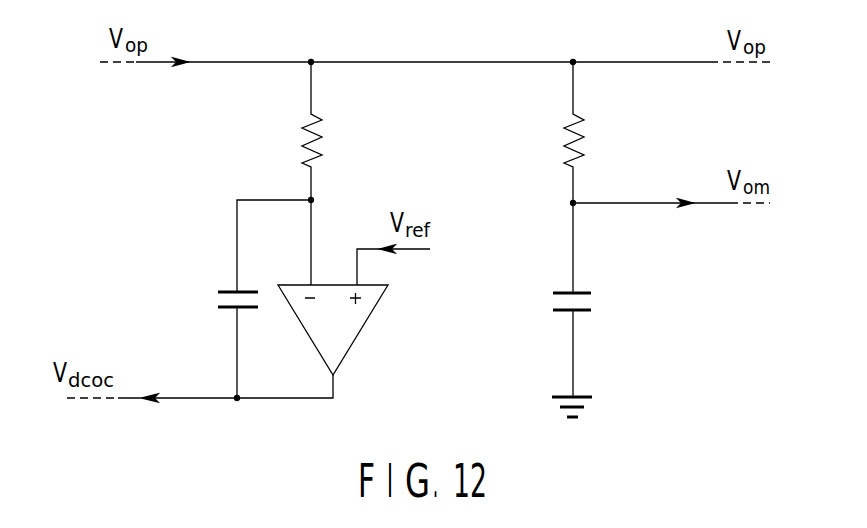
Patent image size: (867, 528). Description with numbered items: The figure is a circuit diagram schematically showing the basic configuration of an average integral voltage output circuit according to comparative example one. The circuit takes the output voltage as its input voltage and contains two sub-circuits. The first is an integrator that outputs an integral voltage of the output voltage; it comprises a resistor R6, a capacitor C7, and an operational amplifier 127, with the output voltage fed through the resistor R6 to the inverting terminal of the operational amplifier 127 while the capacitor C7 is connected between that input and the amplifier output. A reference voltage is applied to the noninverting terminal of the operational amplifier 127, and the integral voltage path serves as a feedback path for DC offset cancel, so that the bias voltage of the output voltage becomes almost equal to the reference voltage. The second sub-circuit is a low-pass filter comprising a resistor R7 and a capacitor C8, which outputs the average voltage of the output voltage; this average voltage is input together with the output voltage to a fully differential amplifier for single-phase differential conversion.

The operational amplifier 127 is at (368, 312).
The resistor R6 is at (294, 131).
The resistor R7 is at (556, 132).
The capacitor C7 is at (223, 301).
The capacitor C8 is at (555, 301).